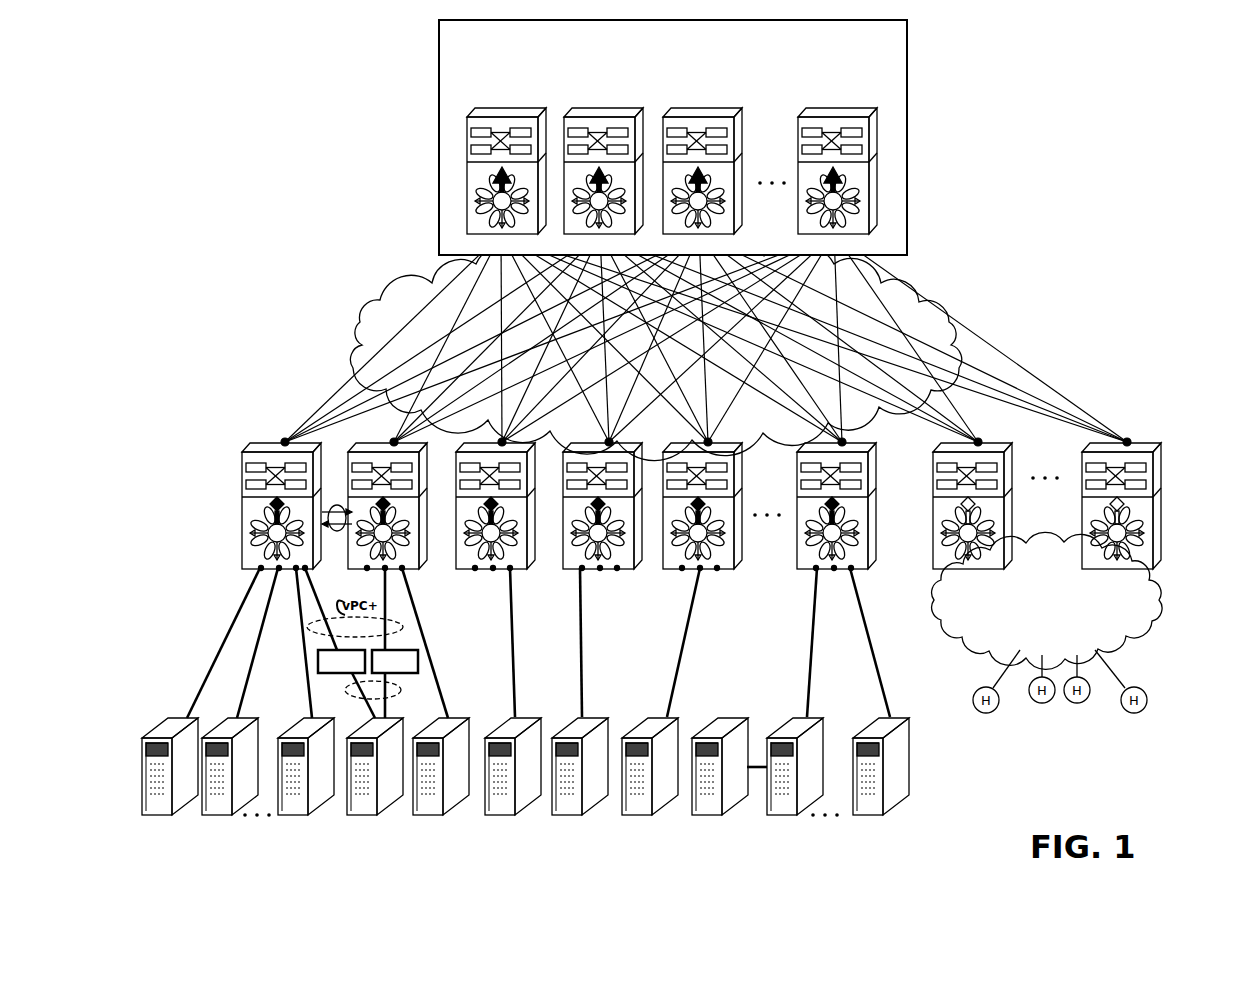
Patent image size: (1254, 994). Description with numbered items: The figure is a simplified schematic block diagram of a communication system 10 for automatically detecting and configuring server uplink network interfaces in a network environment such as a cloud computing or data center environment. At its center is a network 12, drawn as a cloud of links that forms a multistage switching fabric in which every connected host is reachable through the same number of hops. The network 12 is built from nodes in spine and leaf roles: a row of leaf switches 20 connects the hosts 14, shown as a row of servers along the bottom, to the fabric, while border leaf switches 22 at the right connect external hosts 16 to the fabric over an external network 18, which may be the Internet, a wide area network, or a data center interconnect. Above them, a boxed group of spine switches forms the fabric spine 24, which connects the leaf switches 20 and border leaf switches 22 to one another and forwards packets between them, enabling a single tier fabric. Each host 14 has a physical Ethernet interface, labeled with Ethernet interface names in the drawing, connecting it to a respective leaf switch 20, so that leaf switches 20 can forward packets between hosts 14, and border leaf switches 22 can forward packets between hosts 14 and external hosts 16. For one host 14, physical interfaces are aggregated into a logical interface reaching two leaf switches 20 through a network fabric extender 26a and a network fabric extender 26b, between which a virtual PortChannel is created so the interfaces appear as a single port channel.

The communication system 10 is at (1036, 146).
The network 12 is at (350, 338).
The hosts 14 is at (134, 734).
The external hosts 16 is at (1170, 703).
The external network 18 is at (1148, 599).
The leaf switches 20 is at (227, 512).
The border leaf switches 22 is at (1180, 470).
The fabric spine 24 is at (436, 136).
The network fabric extender 26a is at (330, 650).
The network fabric extender 26b is at (392, 650).